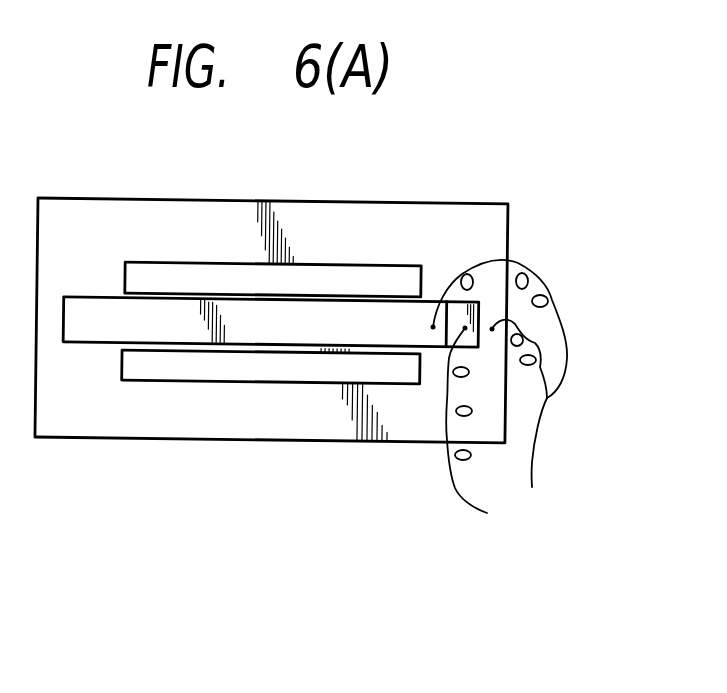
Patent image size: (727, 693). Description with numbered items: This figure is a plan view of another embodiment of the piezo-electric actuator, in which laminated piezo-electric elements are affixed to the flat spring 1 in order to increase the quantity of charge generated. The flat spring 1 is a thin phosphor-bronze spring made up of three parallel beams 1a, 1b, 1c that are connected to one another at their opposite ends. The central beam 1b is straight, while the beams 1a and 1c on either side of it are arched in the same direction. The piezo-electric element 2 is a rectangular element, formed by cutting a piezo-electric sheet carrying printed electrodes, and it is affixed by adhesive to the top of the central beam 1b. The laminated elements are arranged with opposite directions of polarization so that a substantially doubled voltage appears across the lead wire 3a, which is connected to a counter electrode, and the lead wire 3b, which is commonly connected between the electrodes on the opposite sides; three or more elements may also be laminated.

The flat spring 1 is at (349, 201).
The beam 1a is at (246, 223).
The central beam 1b is at (182, 349).
The beam 1c is at (270, 410).
The piezo-electric element 2 is at (163, 320).
The lead wire 3a is at (462, 500).
The lead wire 3b is at (532, 482).